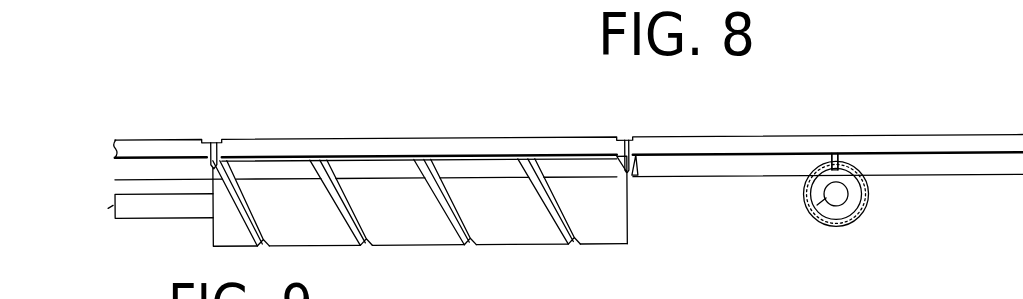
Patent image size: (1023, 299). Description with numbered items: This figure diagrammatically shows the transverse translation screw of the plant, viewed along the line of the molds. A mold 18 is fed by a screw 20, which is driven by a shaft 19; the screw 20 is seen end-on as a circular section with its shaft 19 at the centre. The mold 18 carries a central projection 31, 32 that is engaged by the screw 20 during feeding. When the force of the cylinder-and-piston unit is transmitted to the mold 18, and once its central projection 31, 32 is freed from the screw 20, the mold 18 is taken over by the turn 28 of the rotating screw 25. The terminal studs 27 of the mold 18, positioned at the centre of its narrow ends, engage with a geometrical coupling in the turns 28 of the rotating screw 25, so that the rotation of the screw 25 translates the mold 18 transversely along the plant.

The mold 18 is at (443, 148).
The shaft 19 is at (809, 219).
The screw 20 is at (828, 228).
The screw 25 is at (396, 244).
The terminal studs 27 is at (207, 166).
The turn 28 is at (468, 245).
The central projection 31 is at (895, 196).
The central projection 32 is at (840, 156).